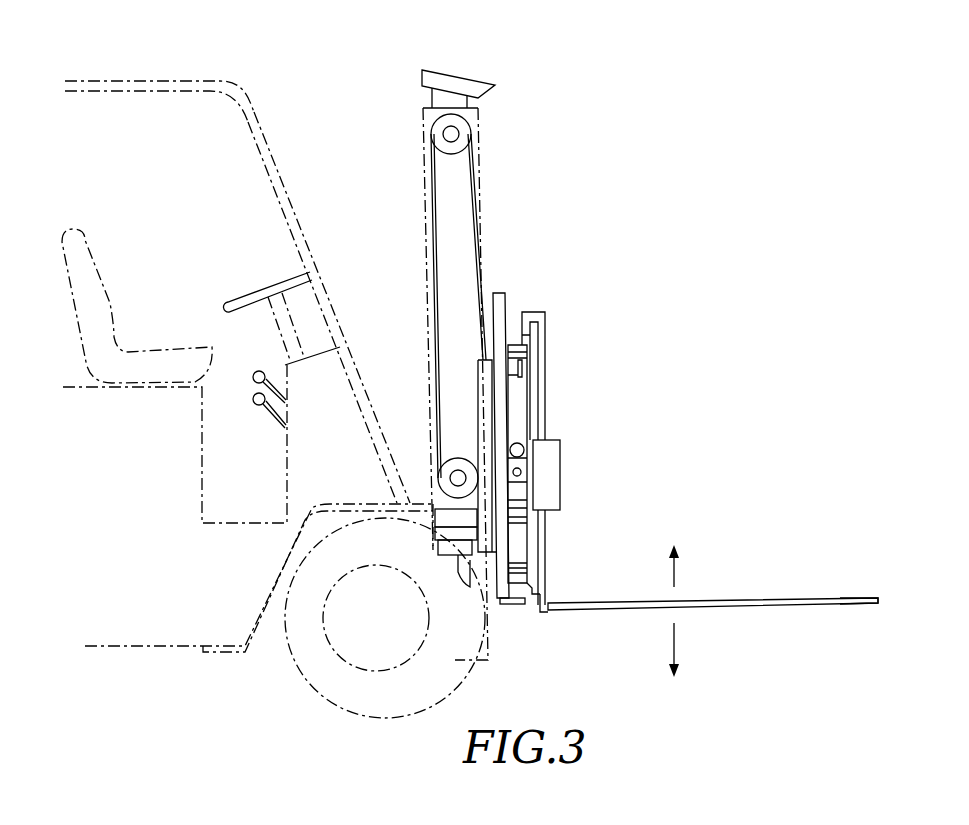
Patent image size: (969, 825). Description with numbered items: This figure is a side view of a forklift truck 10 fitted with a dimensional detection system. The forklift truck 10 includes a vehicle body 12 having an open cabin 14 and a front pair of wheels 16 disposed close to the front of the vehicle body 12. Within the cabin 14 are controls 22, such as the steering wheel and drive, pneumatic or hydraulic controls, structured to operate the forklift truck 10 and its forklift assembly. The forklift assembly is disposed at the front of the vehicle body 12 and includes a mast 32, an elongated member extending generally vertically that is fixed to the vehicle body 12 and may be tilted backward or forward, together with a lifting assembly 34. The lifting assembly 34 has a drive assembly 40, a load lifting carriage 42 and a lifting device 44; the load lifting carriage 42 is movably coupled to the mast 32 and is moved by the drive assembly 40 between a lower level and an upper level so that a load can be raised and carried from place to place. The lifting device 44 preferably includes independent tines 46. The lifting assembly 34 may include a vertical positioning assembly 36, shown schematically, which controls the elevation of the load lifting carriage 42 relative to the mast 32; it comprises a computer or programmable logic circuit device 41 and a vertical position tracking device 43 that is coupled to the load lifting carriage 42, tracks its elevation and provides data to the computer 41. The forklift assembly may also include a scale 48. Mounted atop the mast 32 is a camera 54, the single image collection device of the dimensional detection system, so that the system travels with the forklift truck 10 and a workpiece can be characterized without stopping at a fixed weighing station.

The forklift truck 10 is at (145, 666).
The vehicle body 12 is at (144, 78).
The open cabin 14 is at (132, 203).
The front pair of wheels 16 is at (305, 683).
The controls 22 is at (241, 256).
The mast 32 is at (422, 160).
The lifting assembly 34 is at (370, 477).
The vertical positioning assembly 36 is at (470, 583).
The drive assembly 40 is at (458, 462).
The programmable logic circuit device 41 is at (443, 533).
The load lifting carriage 42 is at (478, 365).
The vertical position tracking device 43 is at (455, 548).
The lifting device 44 is at (838, 598).
The tines 46 is at (840, 606).
The scale 48 is at (517, 628).
The camera 54 is at (436, 70).